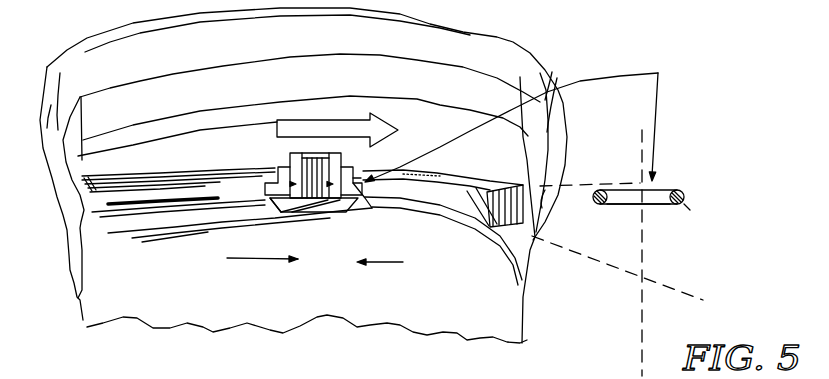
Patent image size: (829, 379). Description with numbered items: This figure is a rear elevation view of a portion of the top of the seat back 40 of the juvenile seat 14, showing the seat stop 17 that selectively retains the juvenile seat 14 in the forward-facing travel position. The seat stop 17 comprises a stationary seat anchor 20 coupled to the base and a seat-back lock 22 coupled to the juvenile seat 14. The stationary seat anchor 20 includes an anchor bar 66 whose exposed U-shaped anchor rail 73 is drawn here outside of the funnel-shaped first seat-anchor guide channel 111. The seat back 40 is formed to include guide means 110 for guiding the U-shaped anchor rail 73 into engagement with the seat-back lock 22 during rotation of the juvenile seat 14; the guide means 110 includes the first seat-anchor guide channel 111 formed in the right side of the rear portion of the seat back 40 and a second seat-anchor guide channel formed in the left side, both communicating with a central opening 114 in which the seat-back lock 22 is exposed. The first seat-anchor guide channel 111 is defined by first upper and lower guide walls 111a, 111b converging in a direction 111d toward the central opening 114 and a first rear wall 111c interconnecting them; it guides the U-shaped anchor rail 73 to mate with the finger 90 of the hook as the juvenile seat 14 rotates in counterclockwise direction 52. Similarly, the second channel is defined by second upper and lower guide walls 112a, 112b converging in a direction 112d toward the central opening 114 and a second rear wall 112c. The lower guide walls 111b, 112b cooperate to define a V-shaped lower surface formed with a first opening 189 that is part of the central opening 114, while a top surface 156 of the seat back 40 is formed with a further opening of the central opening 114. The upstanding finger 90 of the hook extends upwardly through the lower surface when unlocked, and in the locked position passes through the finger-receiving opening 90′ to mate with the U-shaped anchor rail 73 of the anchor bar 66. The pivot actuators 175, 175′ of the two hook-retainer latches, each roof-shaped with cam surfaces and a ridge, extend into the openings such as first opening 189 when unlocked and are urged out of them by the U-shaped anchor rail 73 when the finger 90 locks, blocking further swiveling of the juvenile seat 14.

The juvenile seat 14 is at (514, 40).
The seat back 40 is at (490, 113).
The seat stop 17 is at (526, 120).
The top surface 156 is at (100, 160).
The pivot actuator 175′ is at (281, 166).
The counterclockwise direction 52 is at (332, 122).
The guide means 110 is at (395, 155).
The seat-back lock 22 is at (268, 153).
The second rear wall 112c is at (113, 193).
The second upper guide wall 112a is at (208, 178).
The second lower guide wall 112b is at (262, 208).
The direction 112d is at (257, 259).
The central opening 114 is at (344, 152).
The finger 90 is at (314, 204).
The pivot actuator 175 is at (329, 204).
The first opening 189 is at (280, 203).
The first upper guide wall 111a is at (425, 178).
The first lower guide wall 111b is at (521, 184).
The first rear wall 111c is at (523, 139).
The first seat-anchor guide channel 111 is at (414, 203).
The direction 111d is at (388, 263).
The finger-receiving opening 90′ is at (656, 188).
The anchor bar 66 is at (695, 180).
The U-shaped anchor rail 73 is at (655, 204).
The stationary seat anchor 20 is at (694, 210).